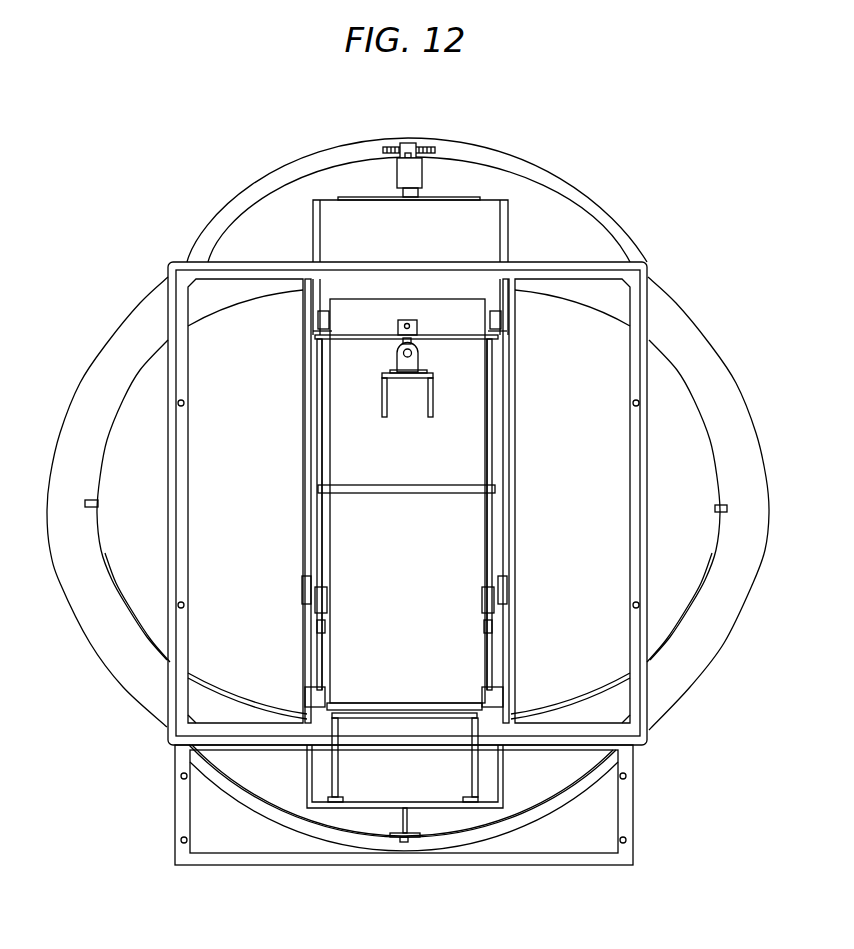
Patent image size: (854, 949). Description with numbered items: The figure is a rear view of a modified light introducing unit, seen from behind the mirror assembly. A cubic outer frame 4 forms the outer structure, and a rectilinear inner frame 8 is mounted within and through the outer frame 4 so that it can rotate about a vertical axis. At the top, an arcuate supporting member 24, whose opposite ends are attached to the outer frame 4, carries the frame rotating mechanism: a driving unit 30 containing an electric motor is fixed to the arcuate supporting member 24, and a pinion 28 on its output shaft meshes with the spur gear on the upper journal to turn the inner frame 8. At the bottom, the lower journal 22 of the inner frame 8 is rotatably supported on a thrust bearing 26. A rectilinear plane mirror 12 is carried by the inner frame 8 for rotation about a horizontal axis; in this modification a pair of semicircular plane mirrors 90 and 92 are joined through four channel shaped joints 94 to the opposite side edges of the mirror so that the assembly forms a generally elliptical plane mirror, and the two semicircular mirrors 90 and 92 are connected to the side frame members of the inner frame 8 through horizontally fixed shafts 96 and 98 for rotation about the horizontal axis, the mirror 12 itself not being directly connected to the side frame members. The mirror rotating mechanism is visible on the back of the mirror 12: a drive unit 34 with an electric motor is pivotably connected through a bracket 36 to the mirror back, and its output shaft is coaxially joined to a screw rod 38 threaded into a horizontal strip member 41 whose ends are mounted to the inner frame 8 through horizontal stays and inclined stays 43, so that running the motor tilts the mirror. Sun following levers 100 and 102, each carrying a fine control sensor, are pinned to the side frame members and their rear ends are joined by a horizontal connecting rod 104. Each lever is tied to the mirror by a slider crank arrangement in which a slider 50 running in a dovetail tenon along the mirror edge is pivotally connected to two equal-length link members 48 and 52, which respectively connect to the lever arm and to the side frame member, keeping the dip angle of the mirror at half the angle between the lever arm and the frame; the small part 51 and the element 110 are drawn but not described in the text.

The outer frame 4 is at (636, 718).
The inner frame 8 is at (508, 240).
The plane mirror 12 is at (403, 307).
The lower journal 22 is at (410, 826).
The arcuate supporting member 24 is at (515, 190).
The thrust bearing 26 is at (390, 148).
The pinion 28 is at (413, 143).
The driving unit 30 is at (415, 172).
The drive unit 34 is at (419, 361).
The bracket 36 is at (415, 390).
The screw rod 38 is at (402, 346).
The horizontal strip member 41 is at (432, 336).
The inclined stays 43 is at (315, 373).
The link member 48 is at (317, 555).
The slider 50 is at (327, 599).
The stop 51 is at (312, 614).
The link member 52 is at (304, 590).
The semicircular plane mirror 90 is at (123, 417).
The semicircular plane mirror 92 is at (685, 425).
The channel shaped joints 94 is at (323, 318).
The shaft 96 is at (91, 499).
The shaft 98 is at (721, 513).
The sun following lever 100 is at (323, 544).
The sun following lever 102 is at (488, 531).
The horizontal connecting rod 104 is at (398, 486).
The pivot block 110 is at (398, 327).